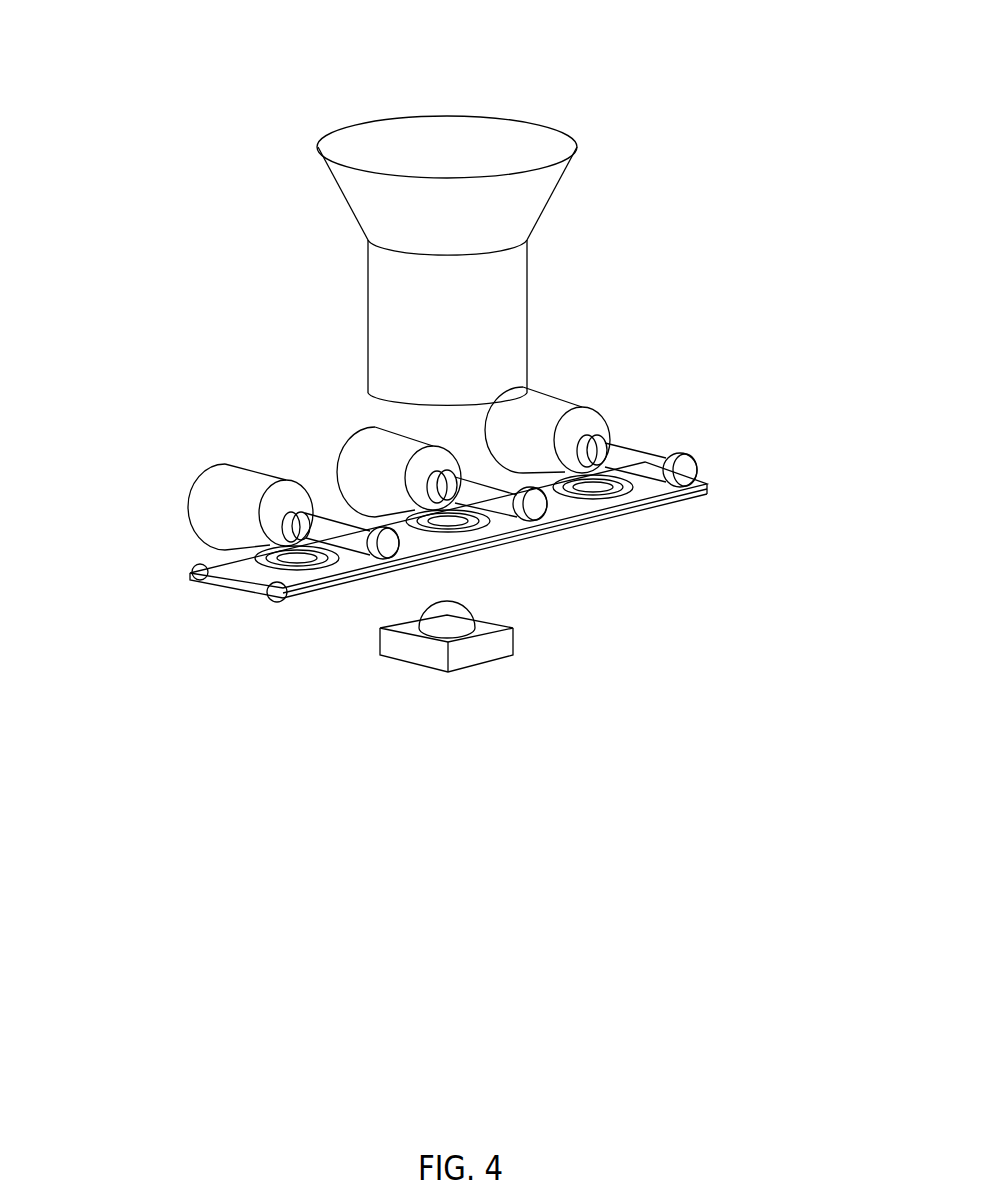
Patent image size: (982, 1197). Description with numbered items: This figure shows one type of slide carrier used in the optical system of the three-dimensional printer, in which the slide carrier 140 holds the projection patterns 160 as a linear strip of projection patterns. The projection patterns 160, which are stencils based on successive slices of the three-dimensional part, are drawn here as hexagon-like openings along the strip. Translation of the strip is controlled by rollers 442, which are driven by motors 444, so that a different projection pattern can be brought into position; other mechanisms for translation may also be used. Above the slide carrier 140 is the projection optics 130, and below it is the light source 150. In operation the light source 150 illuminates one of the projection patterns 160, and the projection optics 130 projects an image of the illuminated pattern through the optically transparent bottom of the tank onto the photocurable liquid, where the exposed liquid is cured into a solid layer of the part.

The projection optics 130 is at (575, 148).
The slide carrier 140 is at (235, 553).
The light source 150 is at (527, 648).
The projection patterns 160 is at (262, 520).
The rollers 442 is at (678, 451).
The motors 444 is at (577, 407).